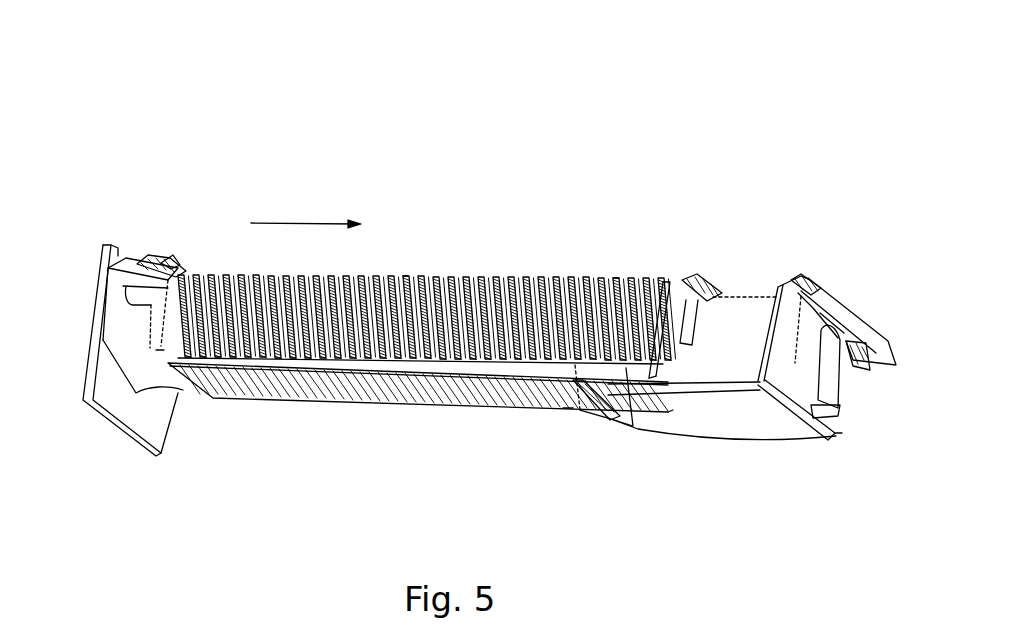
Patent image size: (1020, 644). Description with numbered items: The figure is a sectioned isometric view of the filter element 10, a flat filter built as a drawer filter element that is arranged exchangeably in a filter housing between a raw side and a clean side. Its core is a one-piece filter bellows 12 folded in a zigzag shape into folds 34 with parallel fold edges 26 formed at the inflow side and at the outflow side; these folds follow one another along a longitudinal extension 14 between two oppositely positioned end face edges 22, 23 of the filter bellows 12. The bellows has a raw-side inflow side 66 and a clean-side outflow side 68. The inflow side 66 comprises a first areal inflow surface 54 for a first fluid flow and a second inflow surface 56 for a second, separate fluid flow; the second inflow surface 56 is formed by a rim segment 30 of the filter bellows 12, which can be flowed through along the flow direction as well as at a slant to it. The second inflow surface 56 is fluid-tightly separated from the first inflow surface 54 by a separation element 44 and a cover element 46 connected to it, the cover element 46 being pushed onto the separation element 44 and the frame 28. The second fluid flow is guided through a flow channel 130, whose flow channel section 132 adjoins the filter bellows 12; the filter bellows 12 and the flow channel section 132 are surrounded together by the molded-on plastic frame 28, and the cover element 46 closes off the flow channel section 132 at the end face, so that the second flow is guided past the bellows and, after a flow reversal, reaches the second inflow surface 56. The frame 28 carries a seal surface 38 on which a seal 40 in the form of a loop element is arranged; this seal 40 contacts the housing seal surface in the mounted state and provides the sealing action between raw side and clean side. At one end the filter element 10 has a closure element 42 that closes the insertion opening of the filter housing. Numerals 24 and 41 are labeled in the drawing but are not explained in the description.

The filter element 10 is at (554, 206).
The filter bellows 12 is at (270, 370).
The longitudinal extension 14 is at (287, 215).
The end face edge 22 is at (148, 342).
The end face edge 23 is at (664, 345).
The underside of base plate 24 is at (508, 398).
The fold edges 26 is at (474, 270).
The frame 28 is at (808, 401).
The rim segment 30 is at (648, 266).
The folds 34 is at (414, 270).
The seal surface 38 is at (813, 280).
The seal 40 is at (160, 252).
The projection 41 is at (165, 256).
The closure element 42 is at (95, 275).
The separation element 44 is at (570, 404).
The cover element 46 is at (737, 417).
The first inflow surface 54 is at (382, 390).
The second inflow surface 56 is at (628, 372).
The inflow side 66 is at (560, 408).
The outflow side 68 is at (606, 262).
The flow channel 130 is at (779, 284).
The flow channel section 132 is at (740, 283).